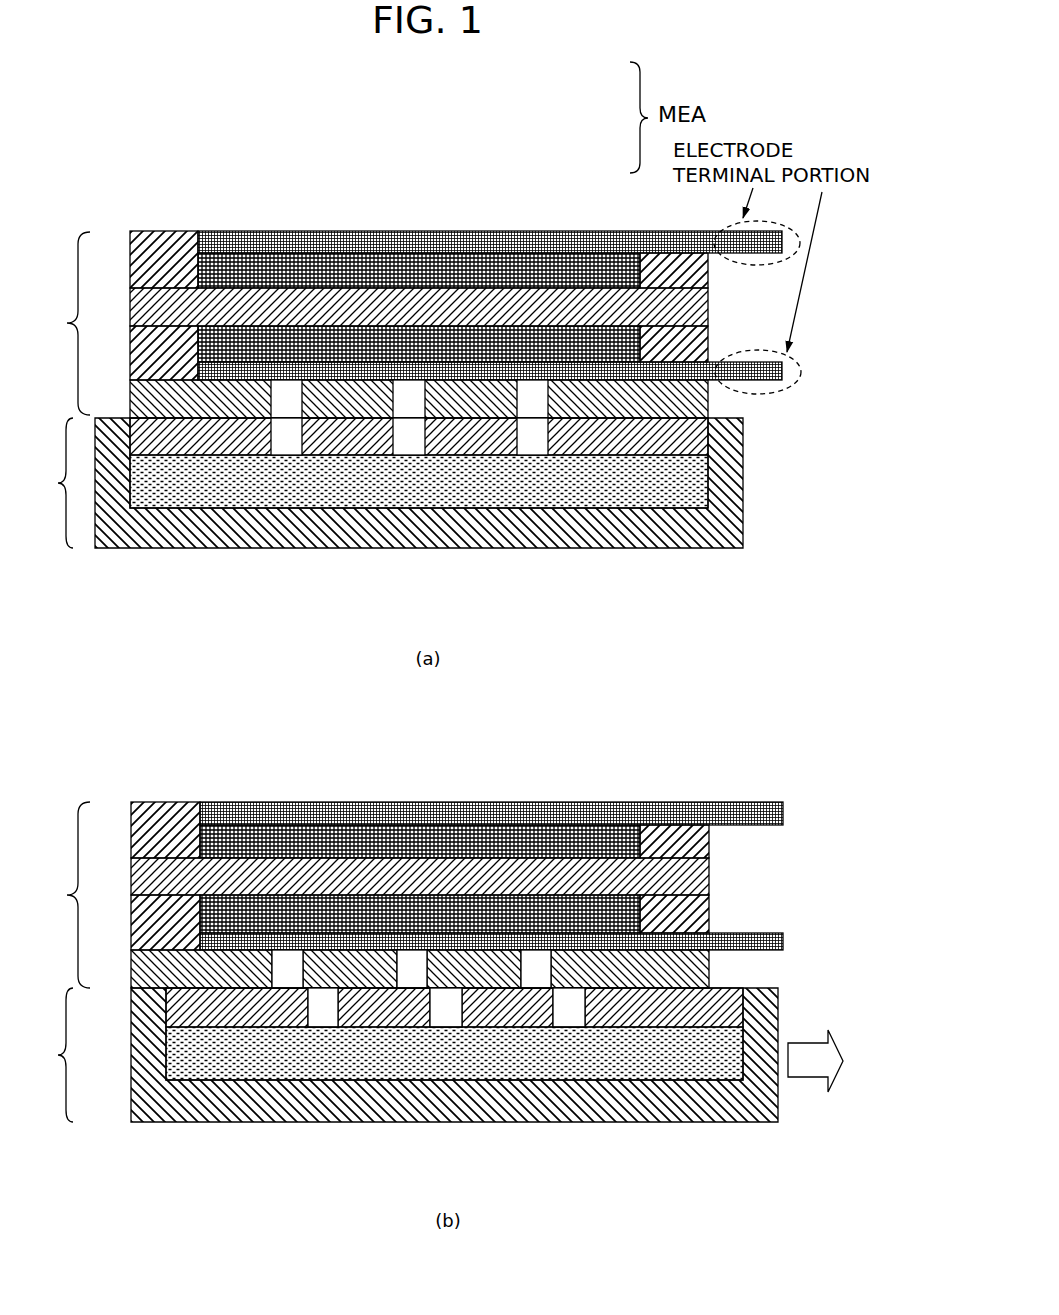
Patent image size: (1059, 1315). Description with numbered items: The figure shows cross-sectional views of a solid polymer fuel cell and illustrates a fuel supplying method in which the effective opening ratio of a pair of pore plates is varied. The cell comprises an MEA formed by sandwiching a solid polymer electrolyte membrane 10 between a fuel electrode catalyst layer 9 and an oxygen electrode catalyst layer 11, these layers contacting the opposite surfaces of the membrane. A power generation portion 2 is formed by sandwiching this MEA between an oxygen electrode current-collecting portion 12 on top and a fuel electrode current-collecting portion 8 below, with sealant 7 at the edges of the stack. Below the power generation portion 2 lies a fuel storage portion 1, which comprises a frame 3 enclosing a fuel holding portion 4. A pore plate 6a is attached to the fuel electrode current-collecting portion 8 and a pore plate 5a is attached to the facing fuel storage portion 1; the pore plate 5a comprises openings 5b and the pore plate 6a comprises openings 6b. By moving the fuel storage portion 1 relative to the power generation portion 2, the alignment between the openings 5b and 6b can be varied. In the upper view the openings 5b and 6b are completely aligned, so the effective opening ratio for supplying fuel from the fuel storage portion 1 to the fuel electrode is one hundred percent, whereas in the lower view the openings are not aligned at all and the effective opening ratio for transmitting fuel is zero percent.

The fuel storage portion 1 is at (55, 770).
The power generation portion 2 is at (68, 610).
The frame 3 is at (555, 553).
The fuel holding portion 4 is at (623, 489).
The pore plate (fuel storage portion side) 5a is at (650, 435).
The opening (fuel storage portion side) 5b is at (286, 440).
The pore plate (power generation portion side) 6a is at (688, 395).
The opening (power generation portion side) 6b is at (530, 395).
The sealant 7 is at (697, 275).
The fuel electrode current-collecting portion 8 is at (787, 372).
The fuel electrode catalyst layer 9 is at (555, 345).
The solid polymer electrolyte membrane 10 is at (537, 310).
The oxygen electrode catalyst layer 11 is at (522, 270).
The oxygen electrode current-collecting portion 12 is at (234, 229).